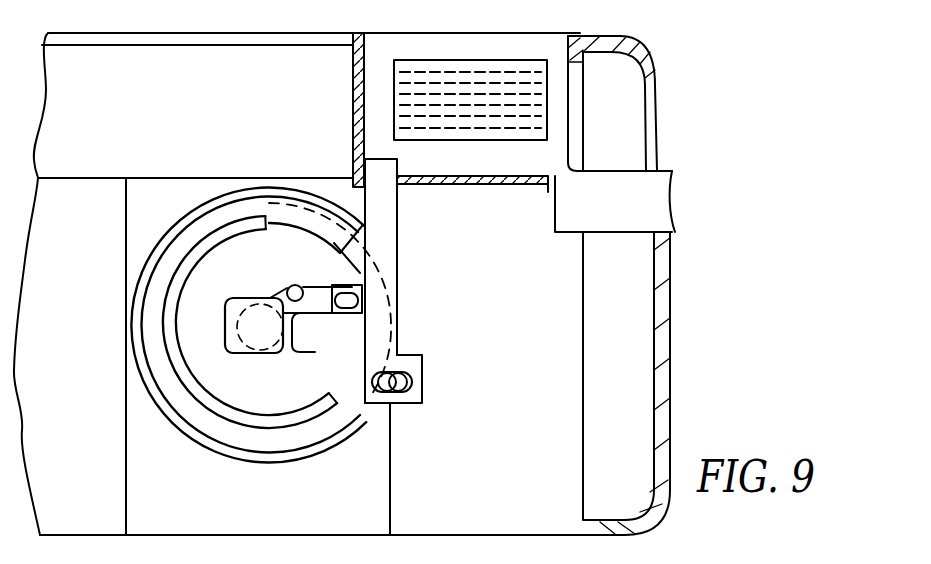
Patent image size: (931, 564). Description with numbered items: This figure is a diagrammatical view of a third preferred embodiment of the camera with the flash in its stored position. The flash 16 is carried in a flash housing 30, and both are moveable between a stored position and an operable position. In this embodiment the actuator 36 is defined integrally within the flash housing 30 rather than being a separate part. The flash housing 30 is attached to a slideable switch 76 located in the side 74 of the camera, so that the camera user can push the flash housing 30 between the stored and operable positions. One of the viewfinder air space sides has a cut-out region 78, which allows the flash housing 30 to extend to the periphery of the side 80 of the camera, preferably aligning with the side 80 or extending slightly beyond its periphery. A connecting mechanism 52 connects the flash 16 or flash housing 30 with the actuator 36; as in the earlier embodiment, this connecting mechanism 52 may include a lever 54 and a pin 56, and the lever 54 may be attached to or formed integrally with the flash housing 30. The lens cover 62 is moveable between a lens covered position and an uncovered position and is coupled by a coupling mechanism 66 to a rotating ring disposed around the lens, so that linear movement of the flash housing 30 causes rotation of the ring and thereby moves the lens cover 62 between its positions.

The flash 16 is at (427, 72).
The flash housing 30 is at (537, 47).
The actuator 36 is at (672, 103).
The connecting mechanism 52 is at (435, 342).
The lever 54 is at (388, 217).
The pin 56 is at (395, 393).
The lens cover 62 is at (285, 348).
The coupling mechanism 66 is at (323, 272).
The side 74 is at (690, 211).
The slideable switch 76 is at (668, 187).
The cut-out region 78 is at (546, 207).
The side 80 is at (665, 340).